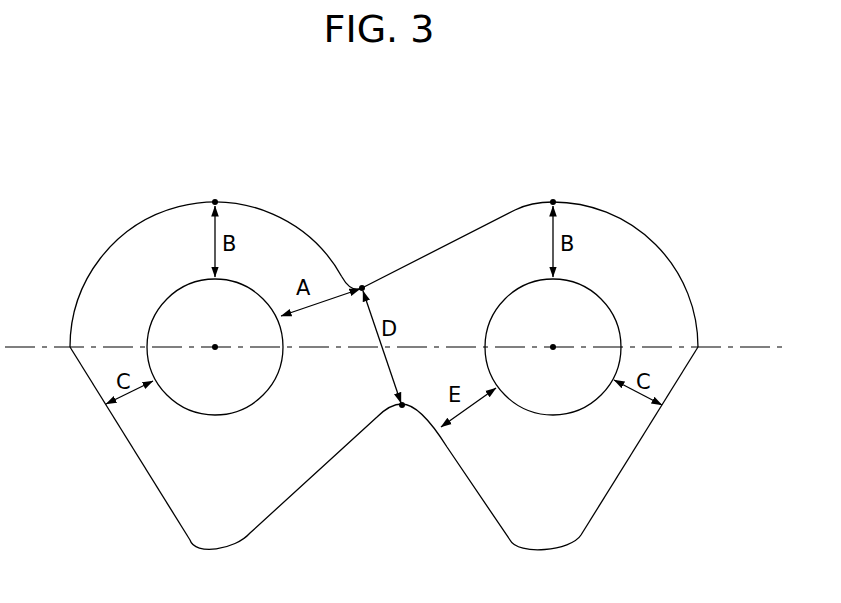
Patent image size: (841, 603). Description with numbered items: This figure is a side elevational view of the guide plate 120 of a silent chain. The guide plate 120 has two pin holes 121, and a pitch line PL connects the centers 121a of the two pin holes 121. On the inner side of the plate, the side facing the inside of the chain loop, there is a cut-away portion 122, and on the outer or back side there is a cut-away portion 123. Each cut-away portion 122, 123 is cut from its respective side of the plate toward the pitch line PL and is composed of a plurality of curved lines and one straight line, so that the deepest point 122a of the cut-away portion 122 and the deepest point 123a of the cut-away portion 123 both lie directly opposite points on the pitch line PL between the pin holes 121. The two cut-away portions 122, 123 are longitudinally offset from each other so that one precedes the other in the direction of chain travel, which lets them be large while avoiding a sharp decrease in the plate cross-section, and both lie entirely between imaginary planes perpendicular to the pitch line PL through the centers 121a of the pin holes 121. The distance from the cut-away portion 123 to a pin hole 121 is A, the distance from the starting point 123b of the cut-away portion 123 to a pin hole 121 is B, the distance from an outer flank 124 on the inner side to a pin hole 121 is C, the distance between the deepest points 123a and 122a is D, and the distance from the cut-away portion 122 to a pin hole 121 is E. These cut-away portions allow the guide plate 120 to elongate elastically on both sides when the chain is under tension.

The guide plate 120 is at (565, 107).
The pin hole 121 is at (216, 413).
The center of pin hole 121a is at (215, 345).
The cut-away portion on the inner side 122 is at (384, 516).
The deepest point of the cut-away portion on the inner side 122a is at (402, 410).
The cut-away portion on the outer side 123 is at (397, 195).
The deepest point of the cut-away portion on the outer side 123a is at (363, 287).
The starting point of the cut-away portion on the outer side 123b is at (215, 202).
The outer flank 124 is at (106, 406).
The pitch line PL is at (726, 345).